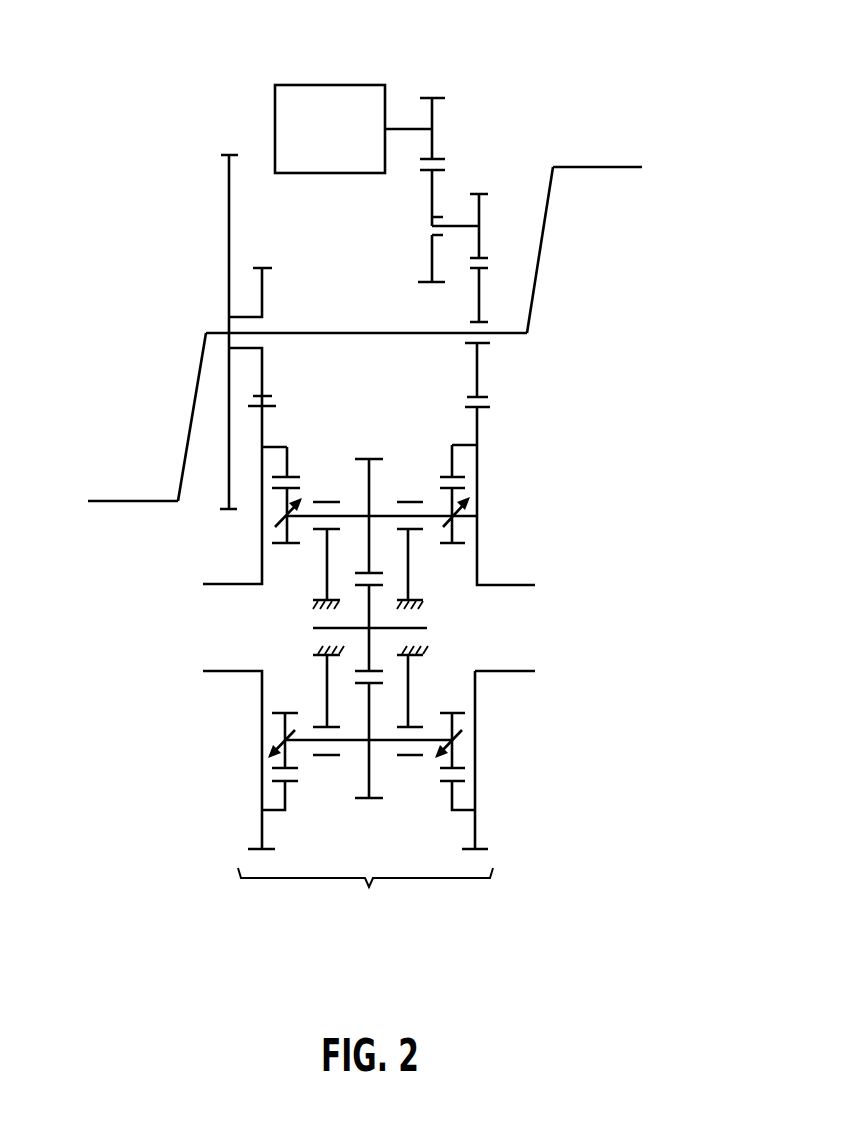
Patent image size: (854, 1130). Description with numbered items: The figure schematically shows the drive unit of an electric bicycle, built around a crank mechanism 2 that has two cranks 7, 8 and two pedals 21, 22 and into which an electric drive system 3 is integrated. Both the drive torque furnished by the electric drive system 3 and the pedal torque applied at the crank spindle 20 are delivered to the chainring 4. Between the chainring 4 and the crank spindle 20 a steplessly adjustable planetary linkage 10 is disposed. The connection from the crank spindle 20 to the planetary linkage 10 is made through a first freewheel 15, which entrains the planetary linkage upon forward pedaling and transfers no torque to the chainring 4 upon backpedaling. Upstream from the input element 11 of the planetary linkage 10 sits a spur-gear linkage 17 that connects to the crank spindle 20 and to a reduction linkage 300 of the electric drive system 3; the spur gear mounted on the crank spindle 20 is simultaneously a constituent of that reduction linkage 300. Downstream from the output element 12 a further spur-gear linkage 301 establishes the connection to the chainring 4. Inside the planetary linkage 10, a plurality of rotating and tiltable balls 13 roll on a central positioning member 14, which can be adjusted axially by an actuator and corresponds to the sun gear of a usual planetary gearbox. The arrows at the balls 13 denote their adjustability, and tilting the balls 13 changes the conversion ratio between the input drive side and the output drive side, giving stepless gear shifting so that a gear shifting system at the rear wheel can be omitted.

The crank mechanism 2 is at (576, 337).
The electric drive system 3 is at (331, 99).
The chainring 4 is at (228, 195).
The crank 7 is at (546, 238).
The crank 8 is at (196, 385).
The steplessly adjustable planetary linkage 10 is at (369, 783).
The input element 11 is at (455, 452).
The output element 12 is at (286, 460).
The balls 13 is at (357, 503).
The central positioning member 14 is at (368, 614).
The first freewheel 15 is at (499, 344).
The spur-gear linkage 17 is at (500, 252).
The crank spindle 20 is at (338, 332).
The pedal 21 is at (605, 166).
The pedal 22 is at (110, 500).
The reduction linkage 300 is at (474, 136).
The further spur-gear linkage 301 is at (290, 393).